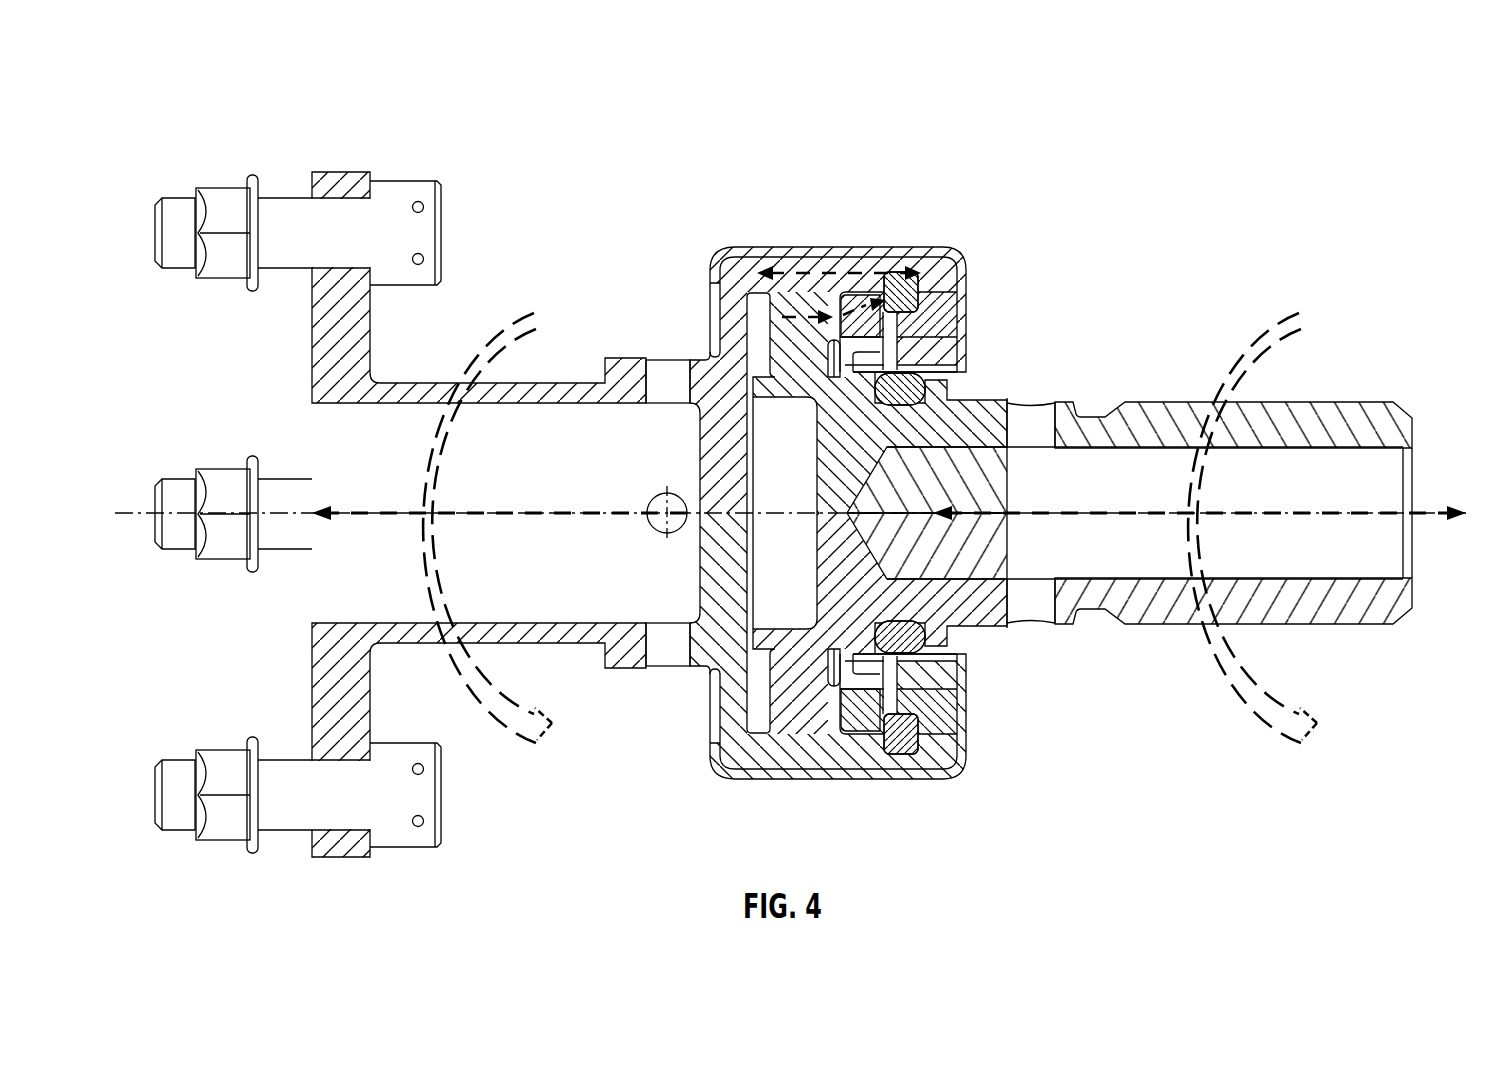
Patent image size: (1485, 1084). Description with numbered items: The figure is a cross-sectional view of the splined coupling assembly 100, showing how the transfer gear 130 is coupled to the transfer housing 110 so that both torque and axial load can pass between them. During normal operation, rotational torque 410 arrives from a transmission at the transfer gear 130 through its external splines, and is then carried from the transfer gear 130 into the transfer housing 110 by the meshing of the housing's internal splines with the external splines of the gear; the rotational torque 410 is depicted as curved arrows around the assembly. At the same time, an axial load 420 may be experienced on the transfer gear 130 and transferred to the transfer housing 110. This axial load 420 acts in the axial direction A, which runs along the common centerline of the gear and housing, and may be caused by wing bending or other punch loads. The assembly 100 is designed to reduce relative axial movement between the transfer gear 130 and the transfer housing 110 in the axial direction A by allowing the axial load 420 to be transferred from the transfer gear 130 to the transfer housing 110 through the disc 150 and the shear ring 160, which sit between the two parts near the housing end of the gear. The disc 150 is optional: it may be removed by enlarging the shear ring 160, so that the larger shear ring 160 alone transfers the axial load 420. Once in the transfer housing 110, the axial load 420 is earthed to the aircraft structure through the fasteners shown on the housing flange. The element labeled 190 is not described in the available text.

The splined coupling assembly 100 is at (204, 118).
The transfer housing 110 is at (348, 171).
The transfer gear 130 is at (1357, 410).
The disc 150 is at (857, 308).
The shear ring 160 is at (913, 282).
The hub housing 190 is at (750, 248).
The rotational torque 410 is at (539, 308).
The axial load 420 is at (917, 283).
The axial direction A is at (128, 513).